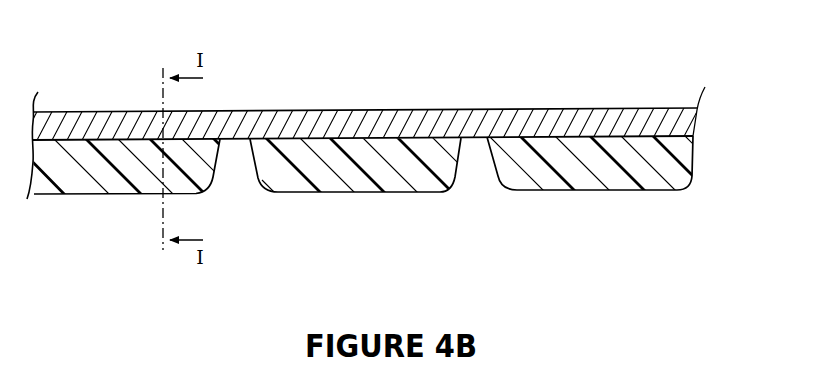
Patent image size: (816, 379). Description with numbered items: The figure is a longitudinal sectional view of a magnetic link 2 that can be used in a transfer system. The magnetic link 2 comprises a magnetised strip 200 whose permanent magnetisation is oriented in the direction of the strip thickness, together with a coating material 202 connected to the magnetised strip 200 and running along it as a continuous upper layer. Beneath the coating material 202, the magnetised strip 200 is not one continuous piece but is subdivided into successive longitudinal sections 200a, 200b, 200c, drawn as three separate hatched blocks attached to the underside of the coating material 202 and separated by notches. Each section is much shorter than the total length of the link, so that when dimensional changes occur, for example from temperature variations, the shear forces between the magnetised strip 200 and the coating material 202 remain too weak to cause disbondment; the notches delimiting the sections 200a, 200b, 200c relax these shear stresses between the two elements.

The magnetic link 2 is at (400, 149).
The coating material 202 is at (412, 122).
The magnetised strip 200 is at (386, 209).
The longitudinal section 200a is at (117, 166).
The longitudinal section 200b is at (375, 167).
The longitudinal section 200c is at (572, 162).